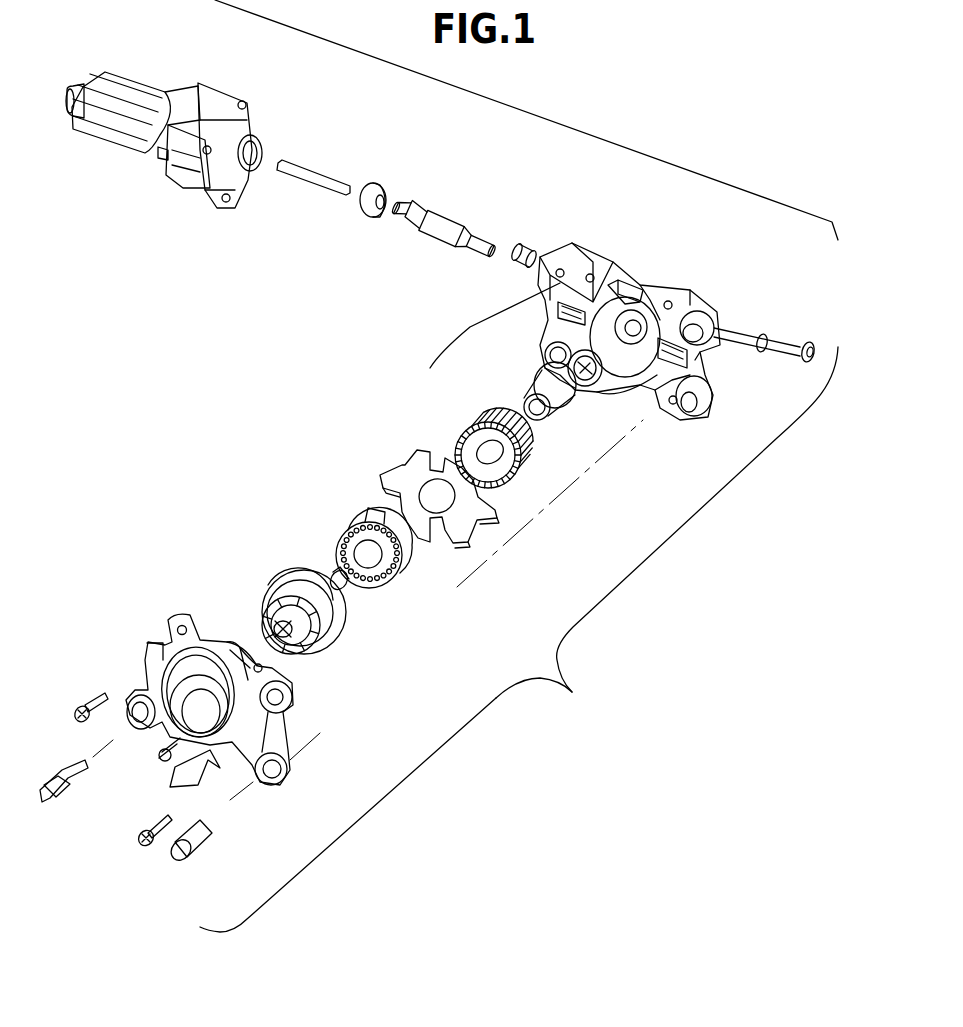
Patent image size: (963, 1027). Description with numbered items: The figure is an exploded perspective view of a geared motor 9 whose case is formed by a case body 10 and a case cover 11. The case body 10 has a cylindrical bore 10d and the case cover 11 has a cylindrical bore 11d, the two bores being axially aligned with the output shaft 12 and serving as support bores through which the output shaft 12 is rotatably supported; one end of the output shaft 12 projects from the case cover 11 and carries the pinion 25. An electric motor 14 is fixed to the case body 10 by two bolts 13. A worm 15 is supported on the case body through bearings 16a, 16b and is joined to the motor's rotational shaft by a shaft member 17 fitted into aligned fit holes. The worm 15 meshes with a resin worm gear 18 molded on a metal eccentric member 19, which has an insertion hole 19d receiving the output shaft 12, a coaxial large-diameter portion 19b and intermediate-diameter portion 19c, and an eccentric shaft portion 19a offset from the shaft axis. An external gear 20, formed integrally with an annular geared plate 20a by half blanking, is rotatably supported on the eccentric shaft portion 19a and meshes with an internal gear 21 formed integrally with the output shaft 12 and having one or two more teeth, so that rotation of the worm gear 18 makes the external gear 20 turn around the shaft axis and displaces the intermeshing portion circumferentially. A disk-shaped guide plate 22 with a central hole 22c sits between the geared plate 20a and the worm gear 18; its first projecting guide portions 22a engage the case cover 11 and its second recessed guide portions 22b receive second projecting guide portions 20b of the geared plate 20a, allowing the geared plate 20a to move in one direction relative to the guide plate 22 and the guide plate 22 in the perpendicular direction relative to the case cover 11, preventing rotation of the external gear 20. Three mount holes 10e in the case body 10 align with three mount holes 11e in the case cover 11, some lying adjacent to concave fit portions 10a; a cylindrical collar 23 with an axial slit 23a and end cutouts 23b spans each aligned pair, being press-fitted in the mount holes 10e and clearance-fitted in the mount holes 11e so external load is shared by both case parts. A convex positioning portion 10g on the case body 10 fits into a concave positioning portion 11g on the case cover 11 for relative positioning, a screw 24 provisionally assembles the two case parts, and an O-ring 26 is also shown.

The geared motor 9 is at (563, 697).
The case body 10 is at (623, 349).
The concave fit portion 10a is at (545, 300).
The cylindrical bore 10d is at (637, 327).
The mount hole 10e is at (693, 410).
The convex positioning portion 10g is at (625, 288).
The case cover 11 is at (250, 699).
The cylindrical bore 11d is at (197, 703).
The mount hole 11e is at (275, 776).
The concave positioning portion 11g is at (200, 620).
The output shaft 12 is at (346, 587).
The bolt 13 is at (782, 340).
The electric motor 14 is at (180, 208).
The worm 15 is at (447, 210).
The bearing 16a is at (382, 176).
The bearing 16b is at (535, 238).
The shaft member 17 is at (312, 170).
The worm gear 18 is at (462, 418).
The eccentric member 19 is at (513, 381).
The eccentric shaft portion 19a is at (527, 400).
The large-diameter portion 19b is at (533, 375).
The intermediate-diameter portion 19c is at (543, 358).
The insertion hole 19d is at (542, 417).
The external gear 20 is at (337, 526).
The geared plate 20a is at (343, 520).
The second projecting guide portion 20b is at (375, 513).
The internal gear 21 is at (308, 595).
The guide plate 22 is at (470, 498).
The first projecting guide portion 22a is at (385, 477).
The second recessed guide portion 22b is at (438, 462).
The central hole 22c is at (445, 505).
The collar 23 is at (127, 795).
The slit 23a is at (68, 797).
The cutout 23b is at (38, 798).
The screw 24 is at (138, 843).
The pinion 25 is at (258, 625).
The O-ring 26 is at (592, 385).